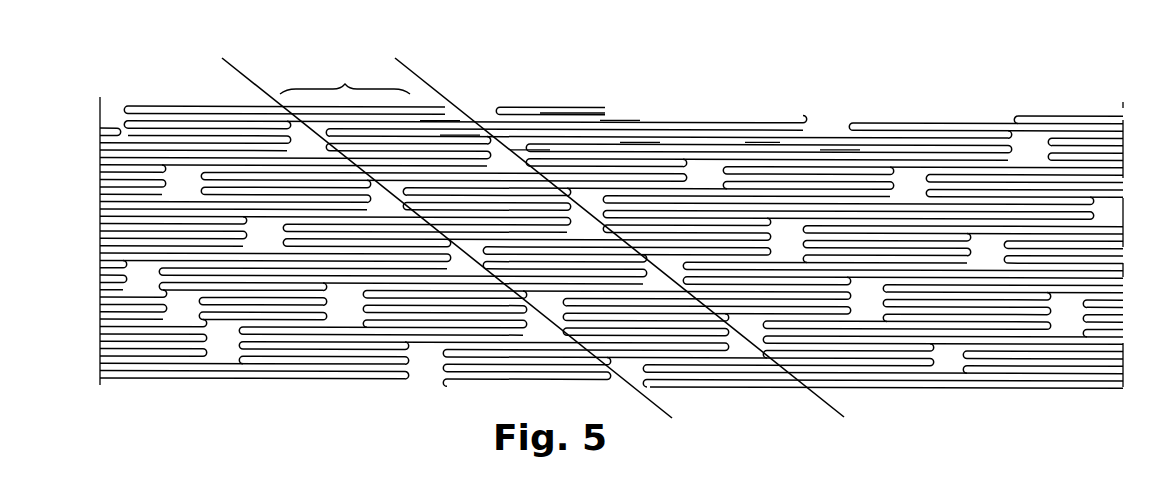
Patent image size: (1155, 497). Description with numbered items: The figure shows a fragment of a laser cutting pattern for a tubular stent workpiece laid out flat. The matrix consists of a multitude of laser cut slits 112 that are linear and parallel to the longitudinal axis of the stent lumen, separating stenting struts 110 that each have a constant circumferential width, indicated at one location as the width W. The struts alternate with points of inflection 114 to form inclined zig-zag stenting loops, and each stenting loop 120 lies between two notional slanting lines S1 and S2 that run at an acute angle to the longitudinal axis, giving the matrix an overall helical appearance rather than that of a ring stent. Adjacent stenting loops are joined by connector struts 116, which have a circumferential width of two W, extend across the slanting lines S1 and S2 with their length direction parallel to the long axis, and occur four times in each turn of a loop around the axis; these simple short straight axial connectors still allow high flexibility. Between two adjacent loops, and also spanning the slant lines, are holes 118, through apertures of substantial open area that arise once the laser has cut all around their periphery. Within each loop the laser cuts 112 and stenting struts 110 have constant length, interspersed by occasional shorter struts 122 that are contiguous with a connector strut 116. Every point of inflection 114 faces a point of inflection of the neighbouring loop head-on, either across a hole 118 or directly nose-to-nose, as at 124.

The notional slanting line S1 is at (439, 225).
The notional slanting line S2 is at (611, 225).
The stenting strut 110 is at (566, 117).
The laser cut slit 112 is at (617, 125).
The point of inflection 114 is at (441, 108).
The connector strut 116 is at (462, 126).
The hole 118 is at (528, 150).
The stenting loop 120 is at (345, 76).
The shorter strut 122 is at (760, 143).
The nose-to-nose location 124 is at (840, 147).
The circumferential width of stenting strut W is at (714, 146).